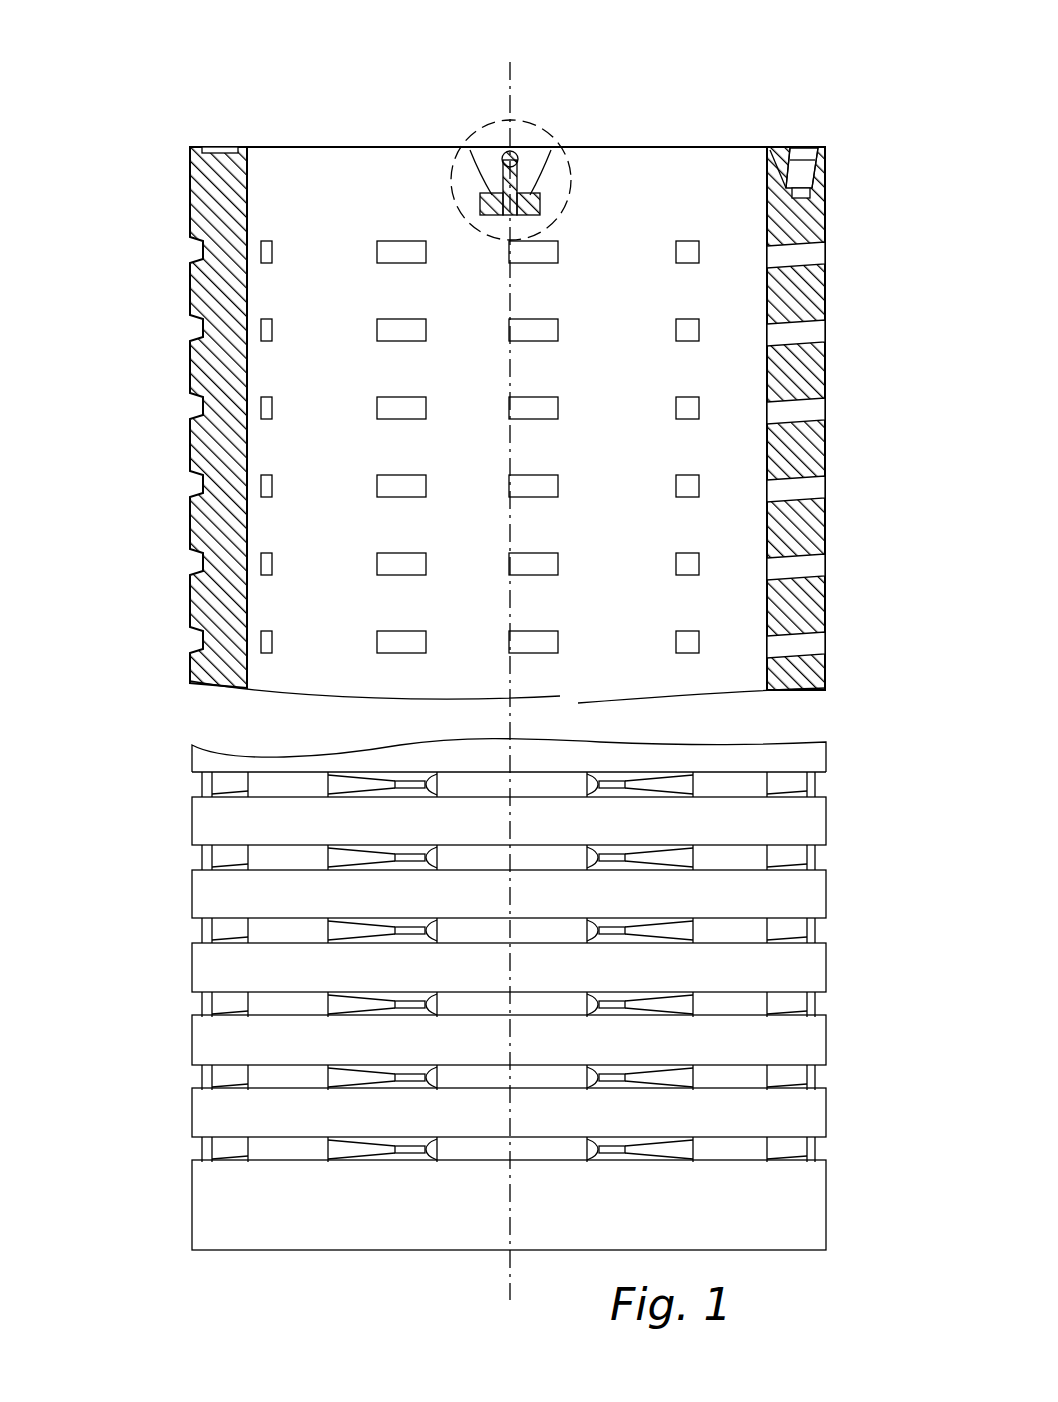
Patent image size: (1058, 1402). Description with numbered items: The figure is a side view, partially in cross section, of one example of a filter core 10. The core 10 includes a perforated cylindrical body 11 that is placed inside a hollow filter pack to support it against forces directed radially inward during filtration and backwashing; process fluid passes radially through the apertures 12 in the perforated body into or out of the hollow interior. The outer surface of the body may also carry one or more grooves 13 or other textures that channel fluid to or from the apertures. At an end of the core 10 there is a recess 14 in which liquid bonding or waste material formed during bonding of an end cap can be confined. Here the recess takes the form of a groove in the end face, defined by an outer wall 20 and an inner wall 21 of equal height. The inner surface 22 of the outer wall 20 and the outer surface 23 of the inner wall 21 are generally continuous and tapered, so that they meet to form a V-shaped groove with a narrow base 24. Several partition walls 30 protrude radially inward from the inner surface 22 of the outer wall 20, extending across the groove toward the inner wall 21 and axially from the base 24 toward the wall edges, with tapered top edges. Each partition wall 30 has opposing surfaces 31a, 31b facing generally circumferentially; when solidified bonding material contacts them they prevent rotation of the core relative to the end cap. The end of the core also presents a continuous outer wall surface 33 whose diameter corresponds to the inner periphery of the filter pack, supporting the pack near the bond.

The core 10 is at (158, 808).
The perforated cylindrical body 11 is at (626, 547).
The apertures 12 is at (537, 343).
The grooves 13 is at (822, 868).
The recess 14 is at (800, 165).
The outer wall 20 is at (820, 185).
The inner wall 21 is at (770, 178).
The inner surface of the outer wall 22 is at (812, 168).
The outer surface of the inner wall 23 is at (787, 150).
The base 24 is at (812, 193).
The partition walls 30 is at (223, 155).
The opposing surface 31a is at (468, 150).
The opposing surface 31b is at (553, 150).
The continuous outer wall surface 33 is at (190, 160).